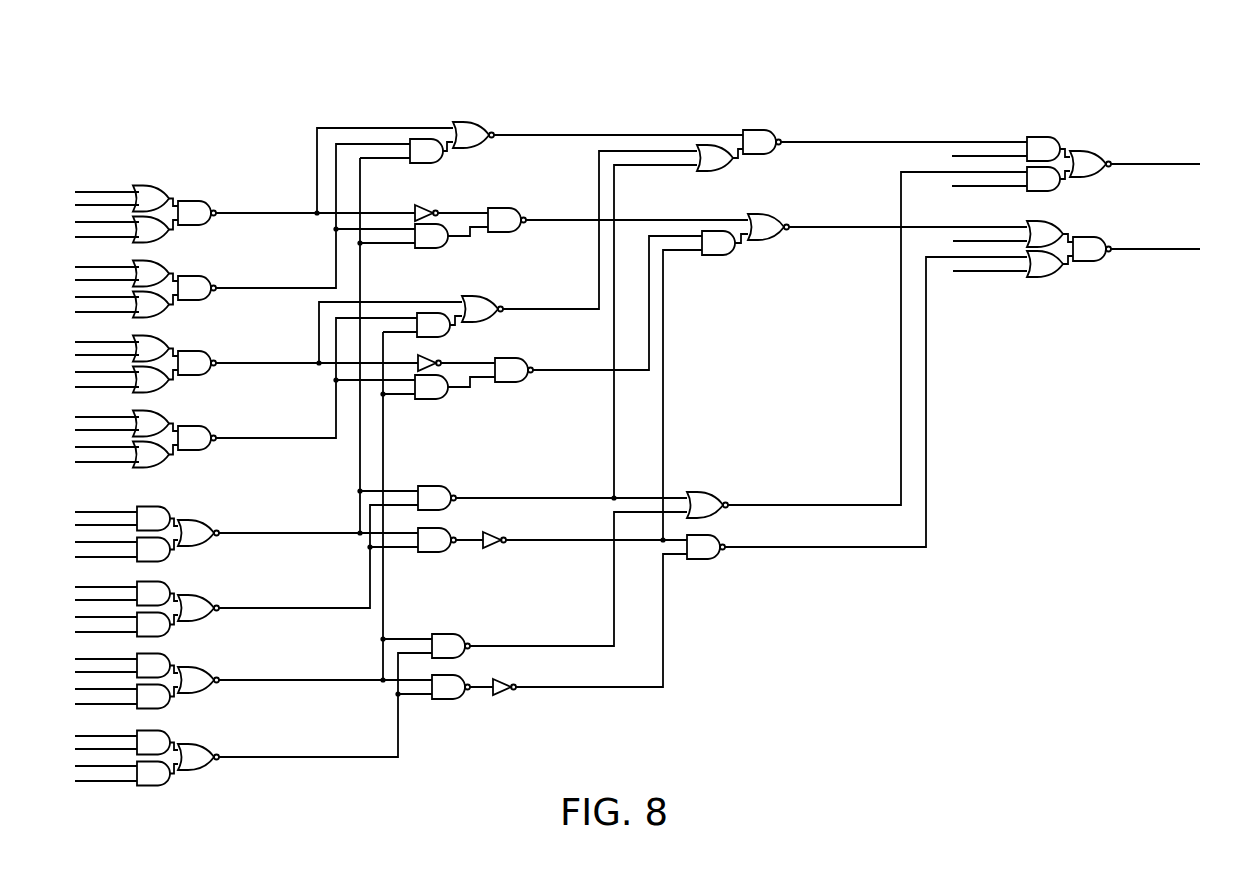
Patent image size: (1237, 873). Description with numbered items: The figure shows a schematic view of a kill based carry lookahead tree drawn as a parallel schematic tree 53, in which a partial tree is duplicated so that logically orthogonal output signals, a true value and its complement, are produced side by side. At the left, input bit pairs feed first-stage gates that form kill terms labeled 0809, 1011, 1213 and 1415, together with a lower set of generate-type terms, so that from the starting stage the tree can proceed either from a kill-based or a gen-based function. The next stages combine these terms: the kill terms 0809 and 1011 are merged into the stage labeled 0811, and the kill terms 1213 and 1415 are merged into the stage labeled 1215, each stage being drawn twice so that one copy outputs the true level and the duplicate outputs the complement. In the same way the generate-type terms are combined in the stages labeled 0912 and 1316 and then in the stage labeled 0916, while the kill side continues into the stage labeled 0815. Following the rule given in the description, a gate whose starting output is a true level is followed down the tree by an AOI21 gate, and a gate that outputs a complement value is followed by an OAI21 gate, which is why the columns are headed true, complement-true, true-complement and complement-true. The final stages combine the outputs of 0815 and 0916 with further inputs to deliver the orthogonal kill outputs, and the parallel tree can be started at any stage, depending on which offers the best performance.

The parallel schematic tree 53 is at (637, 406).
The kill term generator bits 8-9 0809 is at (245, 211).
The kill term generator bits 10-11 1011 is at (242, 231).
The kill term generator bits 12-13 1213 is at (246, 361).
The kill term generator bits 14-15 1415 is at (246, 393).
The kill combine stage bits 8-11 0811 is at (579, 183).
The kill combine stage bits 12-15 1215 is at (558, 275).
The generate combine stage bits 9-12 0912 is at (560, 358).
The generate combine stage bits 13-16 1316 is at (559, 605).
The generate combine stage bits 9-16 0916 is at (857, 365).
The kill combine stage bits 8-15 0815 is at (862, 190).